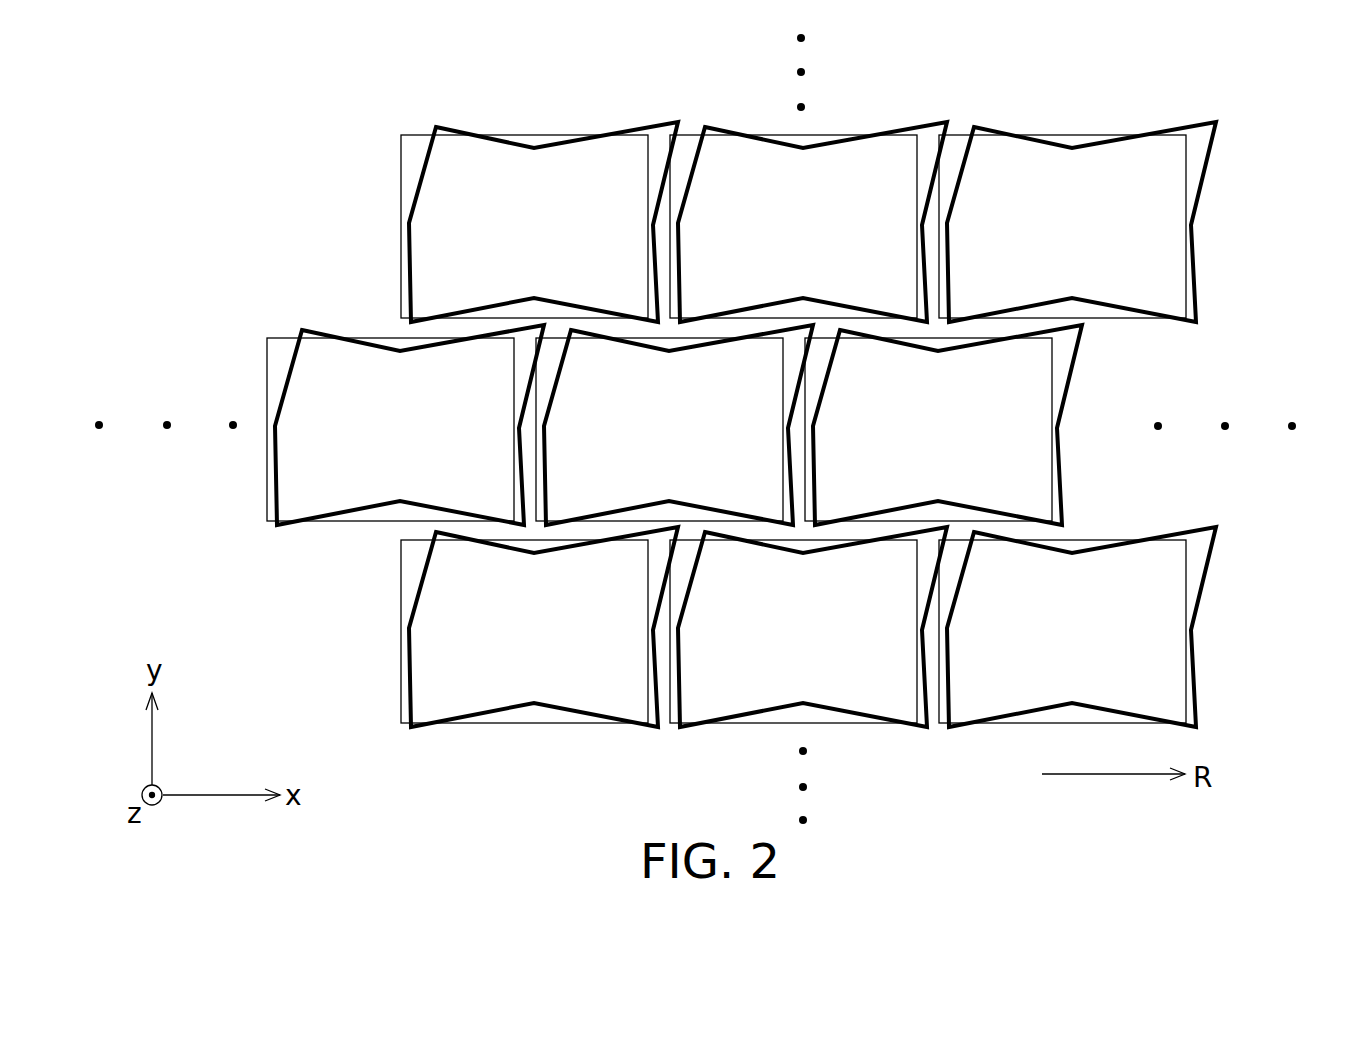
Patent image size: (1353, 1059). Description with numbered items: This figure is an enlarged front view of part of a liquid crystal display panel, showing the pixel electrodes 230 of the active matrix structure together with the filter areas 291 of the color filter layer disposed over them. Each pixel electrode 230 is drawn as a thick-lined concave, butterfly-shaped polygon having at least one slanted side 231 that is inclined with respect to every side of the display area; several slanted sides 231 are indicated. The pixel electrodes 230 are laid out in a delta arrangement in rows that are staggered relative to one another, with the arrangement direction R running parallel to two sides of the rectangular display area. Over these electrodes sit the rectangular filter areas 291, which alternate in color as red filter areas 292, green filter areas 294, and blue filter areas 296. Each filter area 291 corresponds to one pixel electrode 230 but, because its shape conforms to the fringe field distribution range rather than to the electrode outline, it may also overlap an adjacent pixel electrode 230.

The pixel electrode 230 is at (1160, 273).
The slanted side 231 is at (557, 376).
The filter areas 291 is at (725, 428).
The red filter areas 292 is at (401, 181).
The green filter areas 294 is at (903, 127).
The blue filter areas 296 is at (1200, 200).